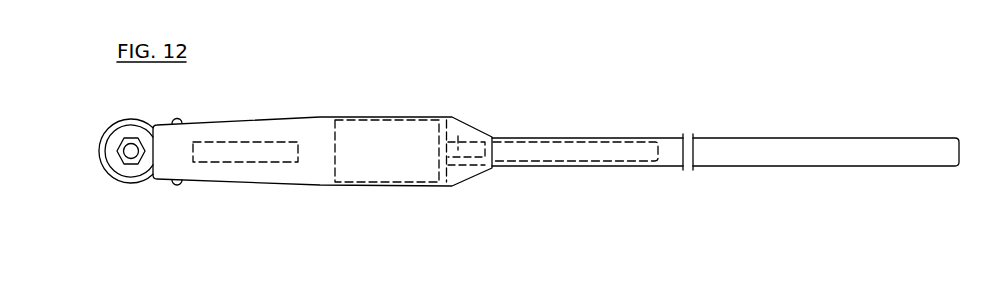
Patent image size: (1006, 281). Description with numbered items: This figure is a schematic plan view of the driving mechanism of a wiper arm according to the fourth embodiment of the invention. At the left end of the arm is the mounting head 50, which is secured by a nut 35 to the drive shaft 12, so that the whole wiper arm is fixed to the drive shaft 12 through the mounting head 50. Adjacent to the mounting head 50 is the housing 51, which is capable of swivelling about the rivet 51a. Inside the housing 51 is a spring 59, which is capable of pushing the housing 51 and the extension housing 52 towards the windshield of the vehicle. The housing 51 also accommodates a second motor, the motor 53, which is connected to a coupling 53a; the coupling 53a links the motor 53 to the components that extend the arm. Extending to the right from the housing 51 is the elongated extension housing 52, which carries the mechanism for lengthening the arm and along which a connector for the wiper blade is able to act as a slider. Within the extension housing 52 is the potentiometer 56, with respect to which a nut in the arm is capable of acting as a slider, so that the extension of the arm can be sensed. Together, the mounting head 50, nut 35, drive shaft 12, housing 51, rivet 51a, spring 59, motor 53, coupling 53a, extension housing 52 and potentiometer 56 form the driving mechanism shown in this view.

The drive shaft 12 is at (131, 149).
The nut 35 is at (138, 138).
The mounting head 50 is at (130, 182).
The housing 51 is at (318, 116).
The rivet 51a is at (178, 119).
The spring 59 is at (245, 145).
The motor 53 is at (380, 127).
The coupling 53a is at (457, 110).
The extension housing 52 is at (583, 137).
The potentiometer 56 is at (618, 152).